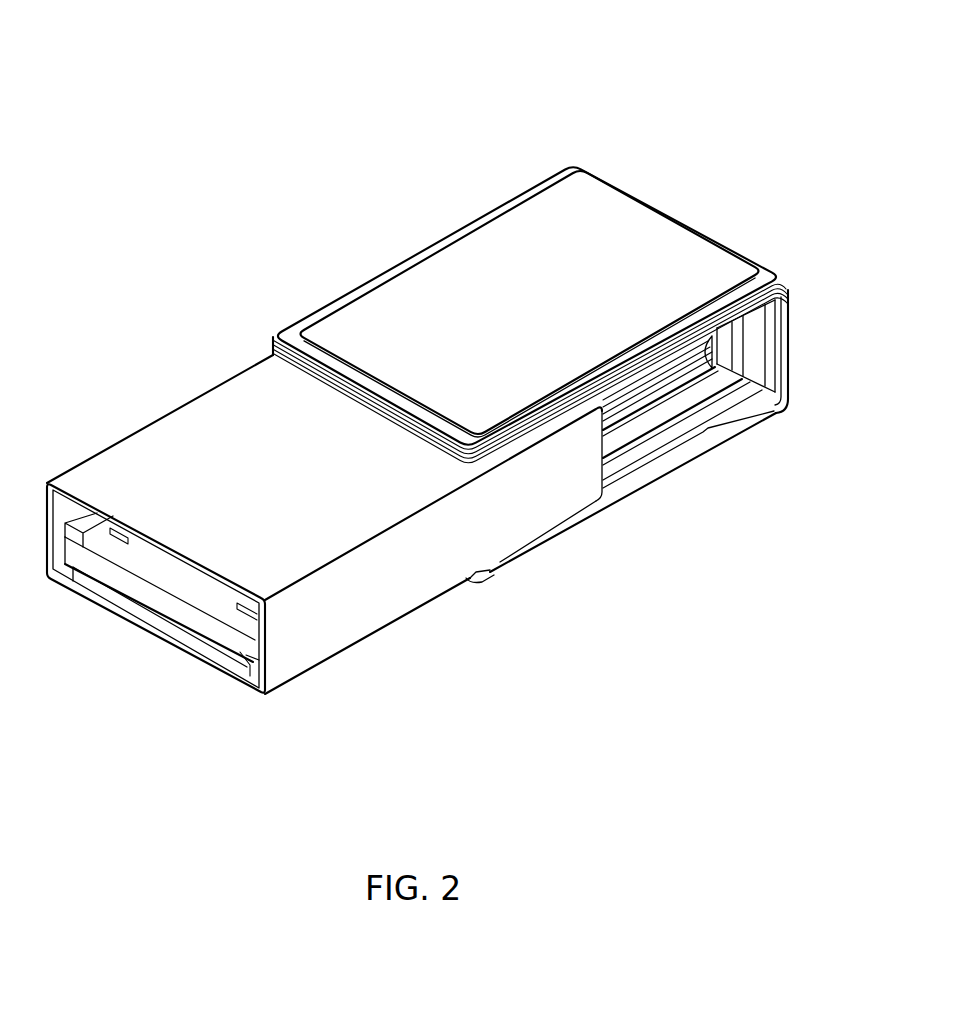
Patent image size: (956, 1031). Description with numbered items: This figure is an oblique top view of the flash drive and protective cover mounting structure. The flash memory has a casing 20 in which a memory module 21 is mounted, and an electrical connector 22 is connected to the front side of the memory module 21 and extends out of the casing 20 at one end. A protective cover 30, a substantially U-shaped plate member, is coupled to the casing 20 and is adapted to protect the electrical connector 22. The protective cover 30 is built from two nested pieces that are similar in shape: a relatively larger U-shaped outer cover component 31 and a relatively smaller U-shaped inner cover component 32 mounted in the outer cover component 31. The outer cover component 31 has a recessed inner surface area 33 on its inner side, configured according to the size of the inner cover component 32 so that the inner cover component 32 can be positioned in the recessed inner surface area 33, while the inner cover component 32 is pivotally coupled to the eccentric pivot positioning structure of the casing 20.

The casing 20 is at (353, 615).
The memory module 21 is at (179, 575).
The electrical connector 22 is at (641, 392).
The protective cover 30 is at (706, 193).
The outer cover component 31 is at (733, 422).
The inner cover component 32 is at (621, 467).
The recessed inner surface area 33 is at (686, 442).